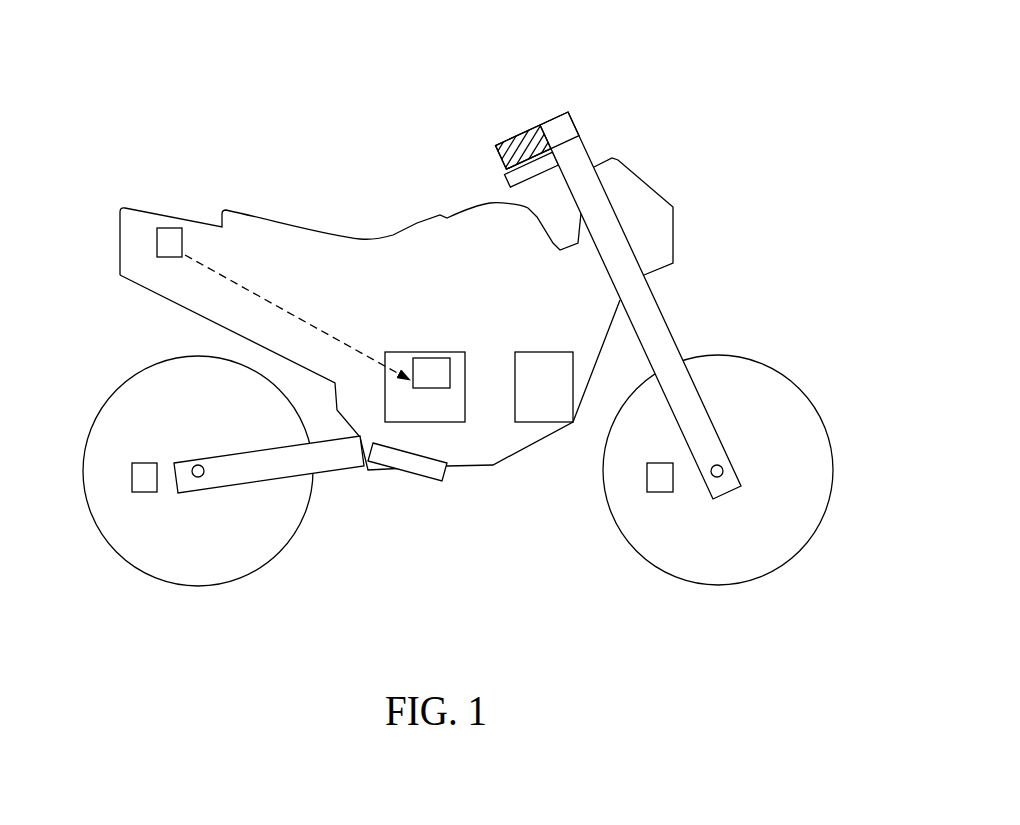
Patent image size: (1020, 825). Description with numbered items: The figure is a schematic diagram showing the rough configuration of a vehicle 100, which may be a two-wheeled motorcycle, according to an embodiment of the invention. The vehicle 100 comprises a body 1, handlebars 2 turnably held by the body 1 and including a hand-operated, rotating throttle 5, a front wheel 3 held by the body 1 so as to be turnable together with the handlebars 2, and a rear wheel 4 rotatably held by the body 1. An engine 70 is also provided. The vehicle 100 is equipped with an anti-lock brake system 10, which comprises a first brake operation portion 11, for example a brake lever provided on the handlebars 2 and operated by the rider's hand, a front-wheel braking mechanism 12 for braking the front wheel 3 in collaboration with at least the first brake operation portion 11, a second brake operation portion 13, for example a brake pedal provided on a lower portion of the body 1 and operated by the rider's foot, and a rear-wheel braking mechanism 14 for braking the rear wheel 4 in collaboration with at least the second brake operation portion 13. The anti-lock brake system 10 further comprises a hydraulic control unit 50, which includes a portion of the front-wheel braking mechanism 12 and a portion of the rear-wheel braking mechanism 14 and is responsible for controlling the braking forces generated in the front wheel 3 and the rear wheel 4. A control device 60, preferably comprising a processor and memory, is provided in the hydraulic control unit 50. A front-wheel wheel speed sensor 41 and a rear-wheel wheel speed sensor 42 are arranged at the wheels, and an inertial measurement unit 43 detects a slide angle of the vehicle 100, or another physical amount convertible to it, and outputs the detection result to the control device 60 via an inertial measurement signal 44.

The vehicle 100 is at (738, 41).
The body 1 is at (290, 237).
The handlebars 2 is at (583, 116).
The front wheel 3 is at (737, 592).
The rear wheel 4 is at (201, 593).
The throttle 5 is at (518, 138).
The anti-lock brake system 10 is at (727, 275).
The first brake operation portion 11 is at (553, 160).
The front-wheel braking mechanism 12 is at (736, 454).
The second brake operation portion 13 is at (433, 478).
The rear-wheel braking mechanism 14 is at (192, 447).
The front-wheel wheel speed sensor 41 is at (658, 492).
The rear-wheel wheel speed sensor 42 is at (132, 481).
The inertial measurement unit 43 is at (168, 228).
The inertial measurement signal 44 is at (273, 301).
The hydraulic control unit 50 is at (397, 352).
The control device 60 is at (432, 358).
The engine 70 is at (527, 352).